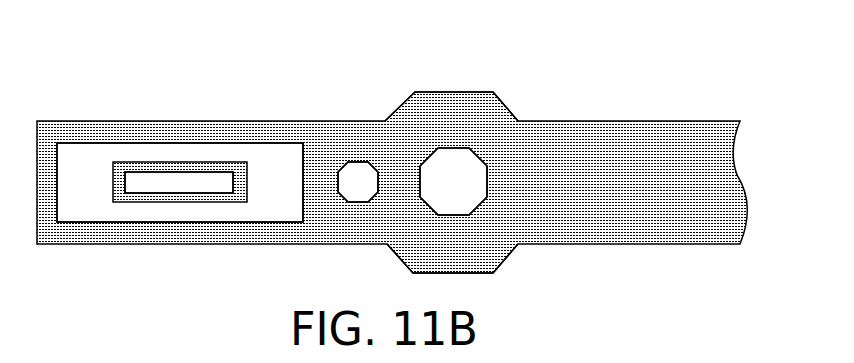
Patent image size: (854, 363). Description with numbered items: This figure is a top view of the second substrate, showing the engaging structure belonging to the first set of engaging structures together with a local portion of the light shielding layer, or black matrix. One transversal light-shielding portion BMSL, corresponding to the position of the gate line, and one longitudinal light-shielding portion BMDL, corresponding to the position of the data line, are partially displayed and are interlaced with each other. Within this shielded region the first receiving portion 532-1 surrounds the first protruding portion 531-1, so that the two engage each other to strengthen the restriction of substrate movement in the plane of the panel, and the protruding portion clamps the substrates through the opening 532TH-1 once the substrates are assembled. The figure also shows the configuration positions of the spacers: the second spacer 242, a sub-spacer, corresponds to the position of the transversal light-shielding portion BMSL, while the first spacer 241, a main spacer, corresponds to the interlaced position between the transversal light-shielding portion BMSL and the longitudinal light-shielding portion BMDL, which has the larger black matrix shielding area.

The transversal light-shielding portion BMSL is at (733, 152).
The longitudinal light-shielding portion BMDL is at (490, 102).
The first protruding portion 531-1 is at (168, 183).
The first receiving portion 532-1 is at (119, 207).
The opening 532TH-1 is at (237, 197).
The first spacer 241 is at (450, 172).
The second spacer 242 is at (357, 187).